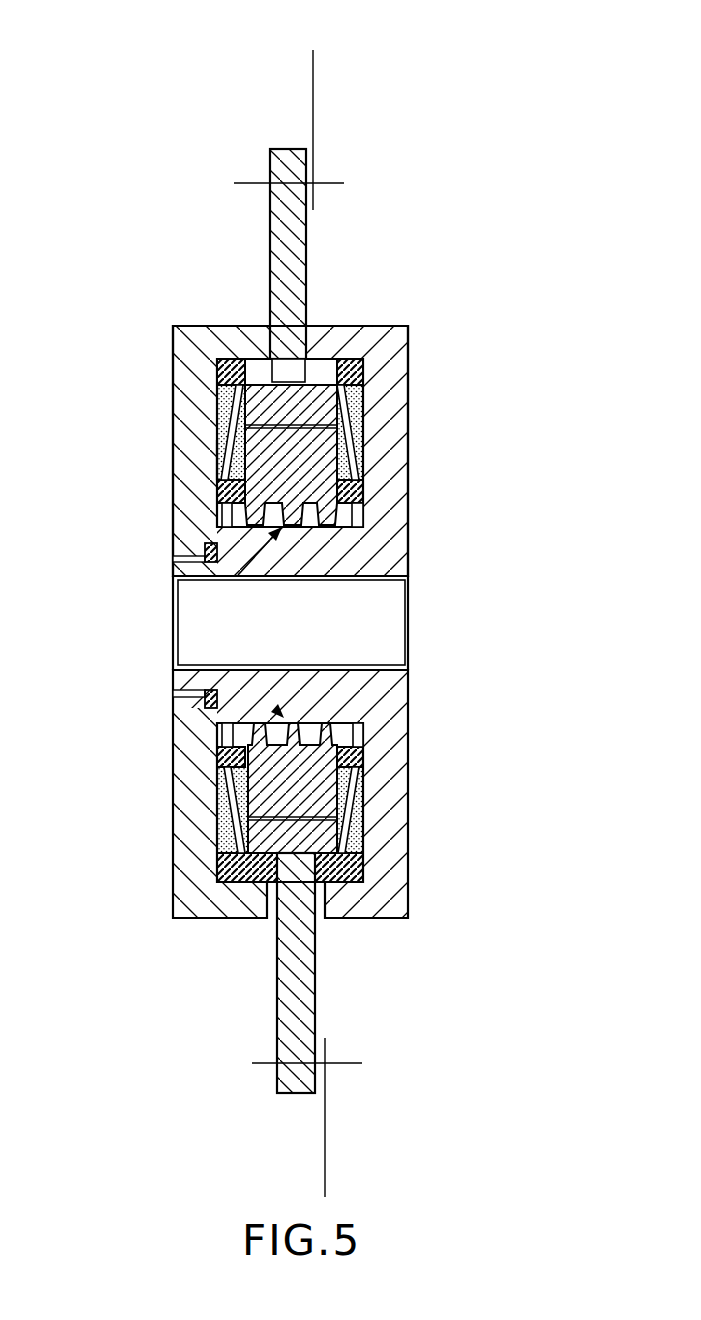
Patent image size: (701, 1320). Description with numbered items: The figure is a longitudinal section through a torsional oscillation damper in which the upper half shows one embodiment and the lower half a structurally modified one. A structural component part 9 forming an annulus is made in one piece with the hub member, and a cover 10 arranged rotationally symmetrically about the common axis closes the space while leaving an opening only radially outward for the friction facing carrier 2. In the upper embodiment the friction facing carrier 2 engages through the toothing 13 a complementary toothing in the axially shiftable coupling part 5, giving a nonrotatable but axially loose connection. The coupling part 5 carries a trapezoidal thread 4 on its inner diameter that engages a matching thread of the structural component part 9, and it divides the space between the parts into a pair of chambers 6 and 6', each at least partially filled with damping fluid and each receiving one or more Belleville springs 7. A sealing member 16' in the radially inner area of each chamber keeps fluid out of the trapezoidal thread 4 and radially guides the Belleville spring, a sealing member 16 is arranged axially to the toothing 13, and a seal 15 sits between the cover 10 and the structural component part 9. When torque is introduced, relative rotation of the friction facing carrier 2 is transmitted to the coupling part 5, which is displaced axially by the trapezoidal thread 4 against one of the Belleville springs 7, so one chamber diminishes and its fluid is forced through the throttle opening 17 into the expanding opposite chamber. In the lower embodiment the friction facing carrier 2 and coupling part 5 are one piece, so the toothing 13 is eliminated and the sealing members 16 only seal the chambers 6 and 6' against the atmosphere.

The friction facing carrier 2 is at (290, 232).
The trapezoidal thread 4 is at (280, 713).
The coupling part 5 is at (315, 464).
The chamber 6 is at (184, 618).
The chamber 6' is at (403, 619).
The Belleville springs 7 is at (232, 425).
The structural component part 9 is at (385, 355).
The cover 10 is at (220, 336).
The toothing 13 is at (330, 358).
The seal 15 is at (205, 548).
The sealing member 16 is at (297, 626).
The sealing member 16' is at (297, 625).
The throttle opening 17 is at (217, 460).